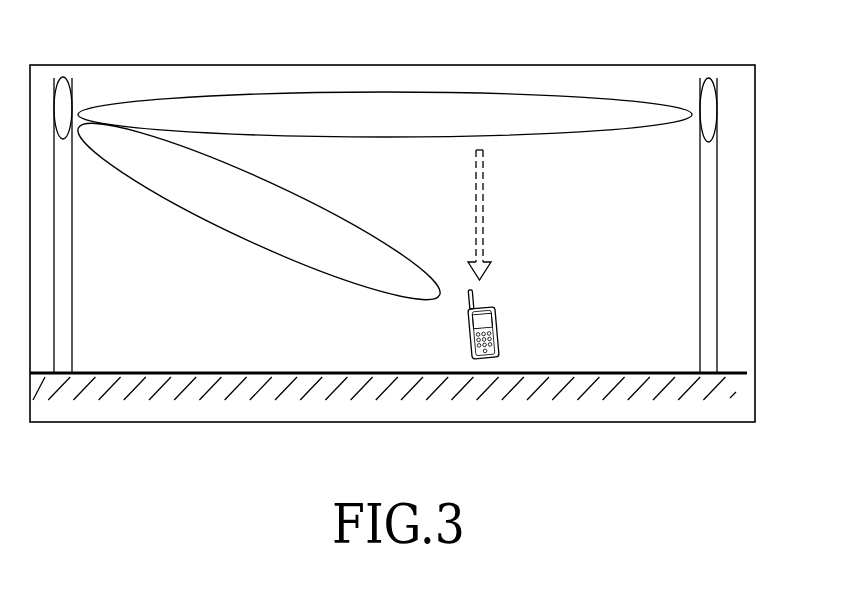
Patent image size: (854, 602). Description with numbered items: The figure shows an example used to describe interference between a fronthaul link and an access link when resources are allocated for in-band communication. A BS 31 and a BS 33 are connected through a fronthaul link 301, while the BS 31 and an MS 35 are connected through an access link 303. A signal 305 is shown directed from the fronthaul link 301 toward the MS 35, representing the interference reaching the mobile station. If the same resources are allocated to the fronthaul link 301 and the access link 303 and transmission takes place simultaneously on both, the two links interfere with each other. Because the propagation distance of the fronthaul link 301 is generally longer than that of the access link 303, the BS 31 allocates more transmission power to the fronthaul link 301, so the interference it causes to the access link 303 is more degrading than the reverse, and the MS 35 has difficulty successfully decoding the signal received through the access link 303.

The BS 31 is at (63, 90).
The BS 33 is at (705, 94).
The fronthaul link 301 is at (573, 123).
The access link 303 is at (333, 260).
The downlink signal to terminal 305 is at (484, 230).
The MS 35 is at (498, 330).